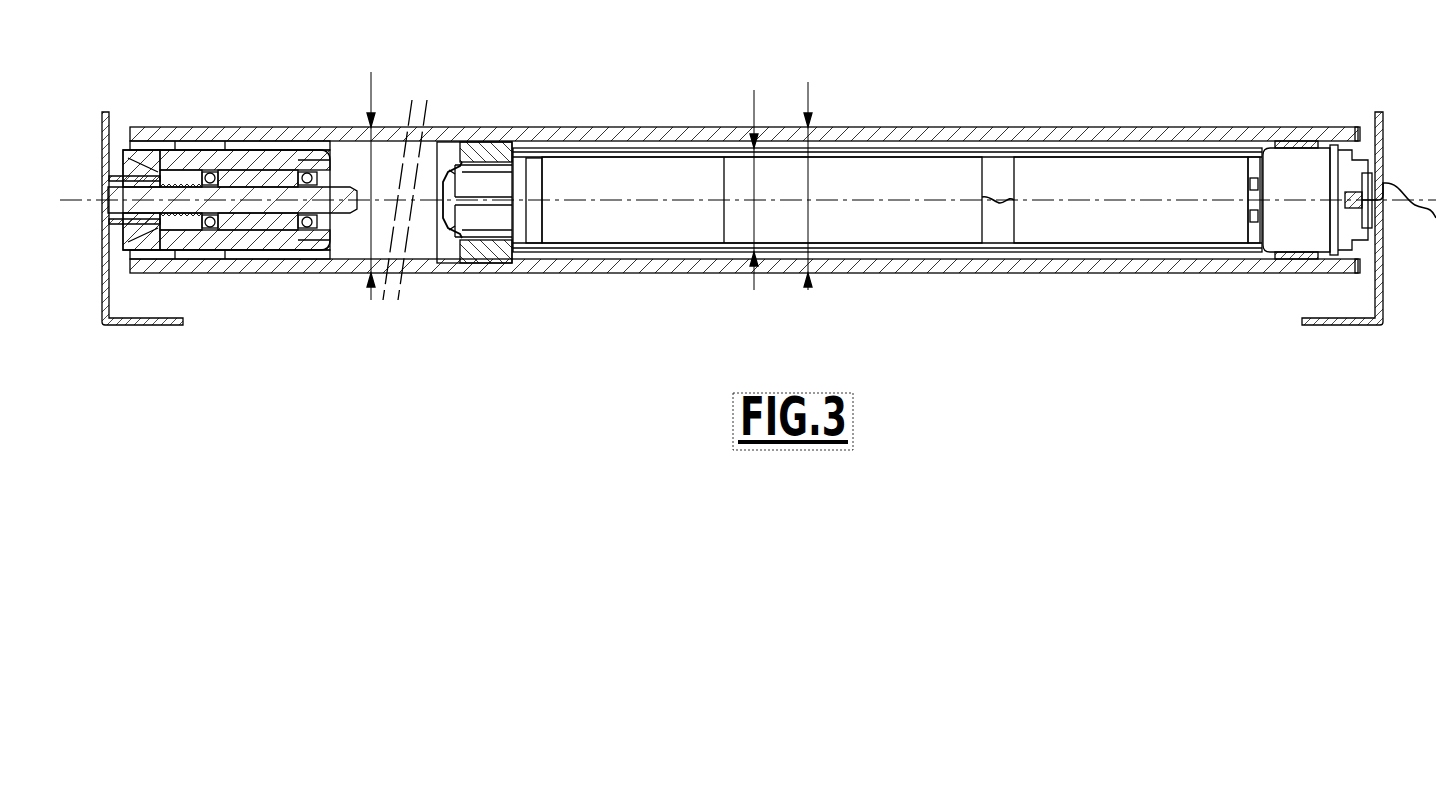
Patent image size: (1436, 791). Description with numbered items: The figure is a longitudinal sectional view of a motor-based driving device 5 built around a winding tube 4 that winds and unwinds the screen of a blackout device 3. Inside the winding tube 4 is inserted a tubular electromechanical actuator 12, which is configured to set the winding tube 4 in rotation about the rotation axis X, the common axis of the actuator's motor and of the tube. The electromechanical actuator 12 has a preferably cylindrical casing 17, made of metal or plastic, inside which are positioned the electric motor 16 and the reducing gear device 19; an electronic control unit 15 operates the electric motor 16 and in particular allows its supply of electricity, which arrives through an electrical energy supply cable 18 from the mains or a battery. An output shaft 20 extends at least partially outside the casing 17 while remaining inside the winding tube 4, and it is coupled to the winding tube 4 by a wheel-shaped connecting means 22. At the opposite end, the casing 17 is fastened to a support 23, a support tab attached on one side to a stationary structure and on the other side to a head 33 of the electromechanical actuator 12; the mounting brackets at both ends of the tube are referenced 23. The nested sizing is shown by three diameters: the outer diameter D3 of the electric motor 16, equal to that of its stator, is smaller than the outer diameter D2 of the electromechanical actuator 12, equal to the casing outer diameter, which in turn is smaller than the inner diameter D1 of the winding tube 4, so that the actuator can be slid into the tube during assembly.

The blackout device 3 is at (298, 325).
The winding tube 4 is at (262, 133).
The motor-based driving device 5 is at (1270, 100).
The electromechanical actuator 12 is at (999, 172).
The electronic control unit 15 is at (1200, 180).
The electric motor 16 is at (958, 175).
The casing 17 is at (1133, 150).
The electrical energy supply cable 18 is at (1402, 215).
The reducing gear device 19 is at (626, 178).
The output shaft 20 is at (480, 212).
The connecting means 22 is at (478, 148).
The support 23 is at (160, 330).
The head 33 is at (1290, 225).
The rotation axis X is at (748, 238).
The inner diameter of the winding tube D1 is at (387, 186).
The outer diameter of the electromechanical actuator D2 is at (825, 186).
The outer diameter of the electric motor D3 is at (771, 190).